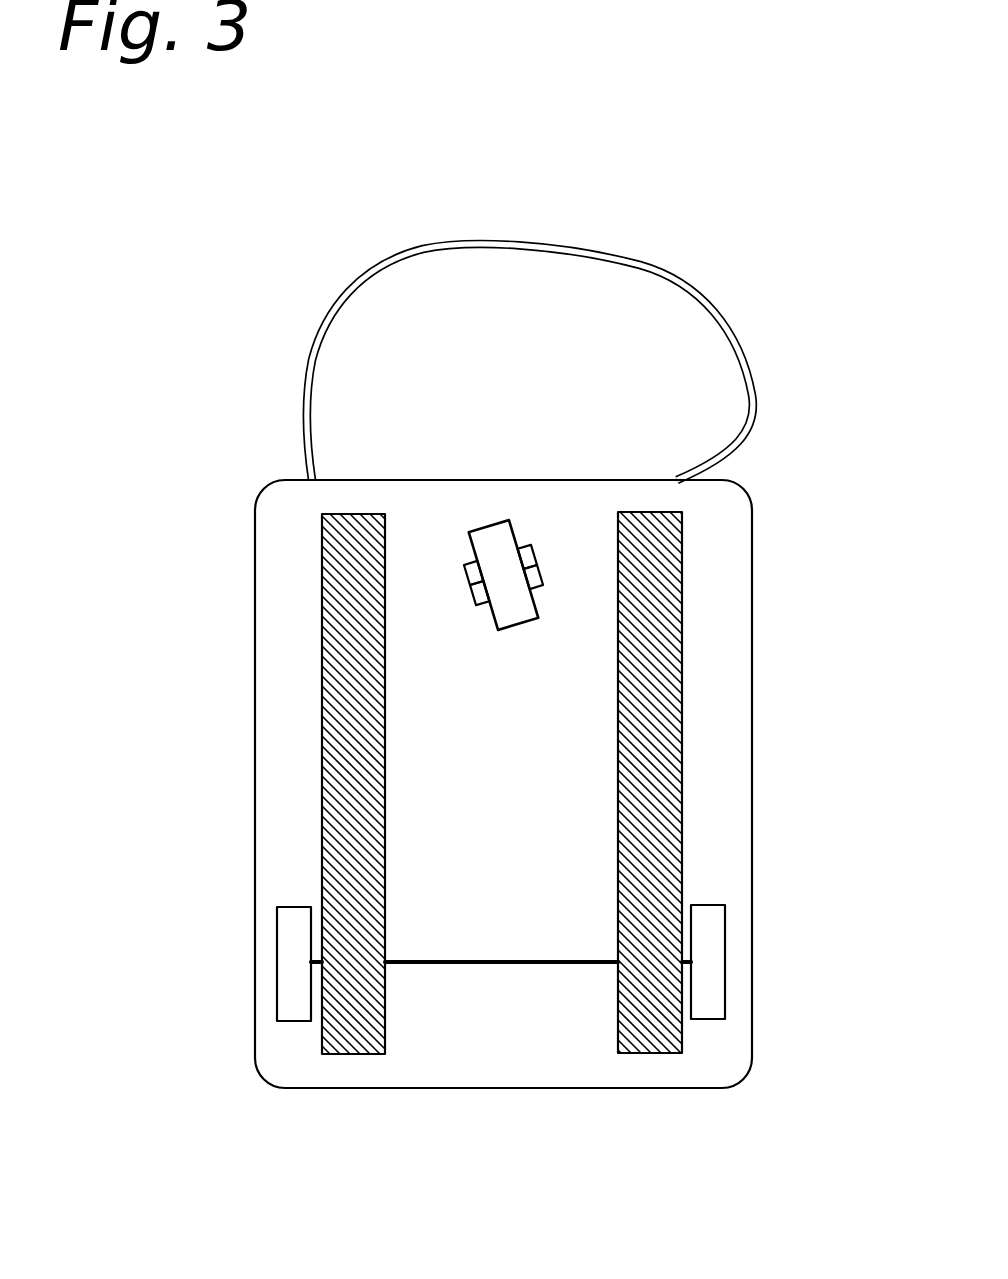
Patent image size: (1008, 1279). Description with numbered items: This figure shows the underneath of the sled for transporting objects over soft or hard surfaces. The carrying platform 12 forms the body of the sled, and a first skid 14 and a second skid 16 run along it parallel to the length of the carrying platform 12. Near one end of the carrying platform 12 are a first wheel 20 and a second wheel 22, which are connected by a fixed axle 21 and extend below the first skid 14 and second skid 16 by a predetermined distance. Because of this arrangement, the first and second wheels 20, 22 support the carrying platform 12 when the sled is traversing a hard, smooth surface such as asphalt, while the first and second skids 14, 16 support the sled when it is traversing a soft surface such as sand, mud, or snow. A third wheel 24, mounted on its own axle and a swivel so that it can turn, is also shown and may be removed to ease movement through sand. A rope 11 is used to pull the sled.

The rope 11 is at (750, 402).
The carrying platform 12 is at (282, 627).
The first skid 14 is at (667, 660).
The second skid 16 is at (340, 838).
The first wheel 20 is at (717, 987).
The fixed axle 21 is at (515, 962).
The second wheel 22 is at (288, 992).
The third wheel 24 is at (528, 496).